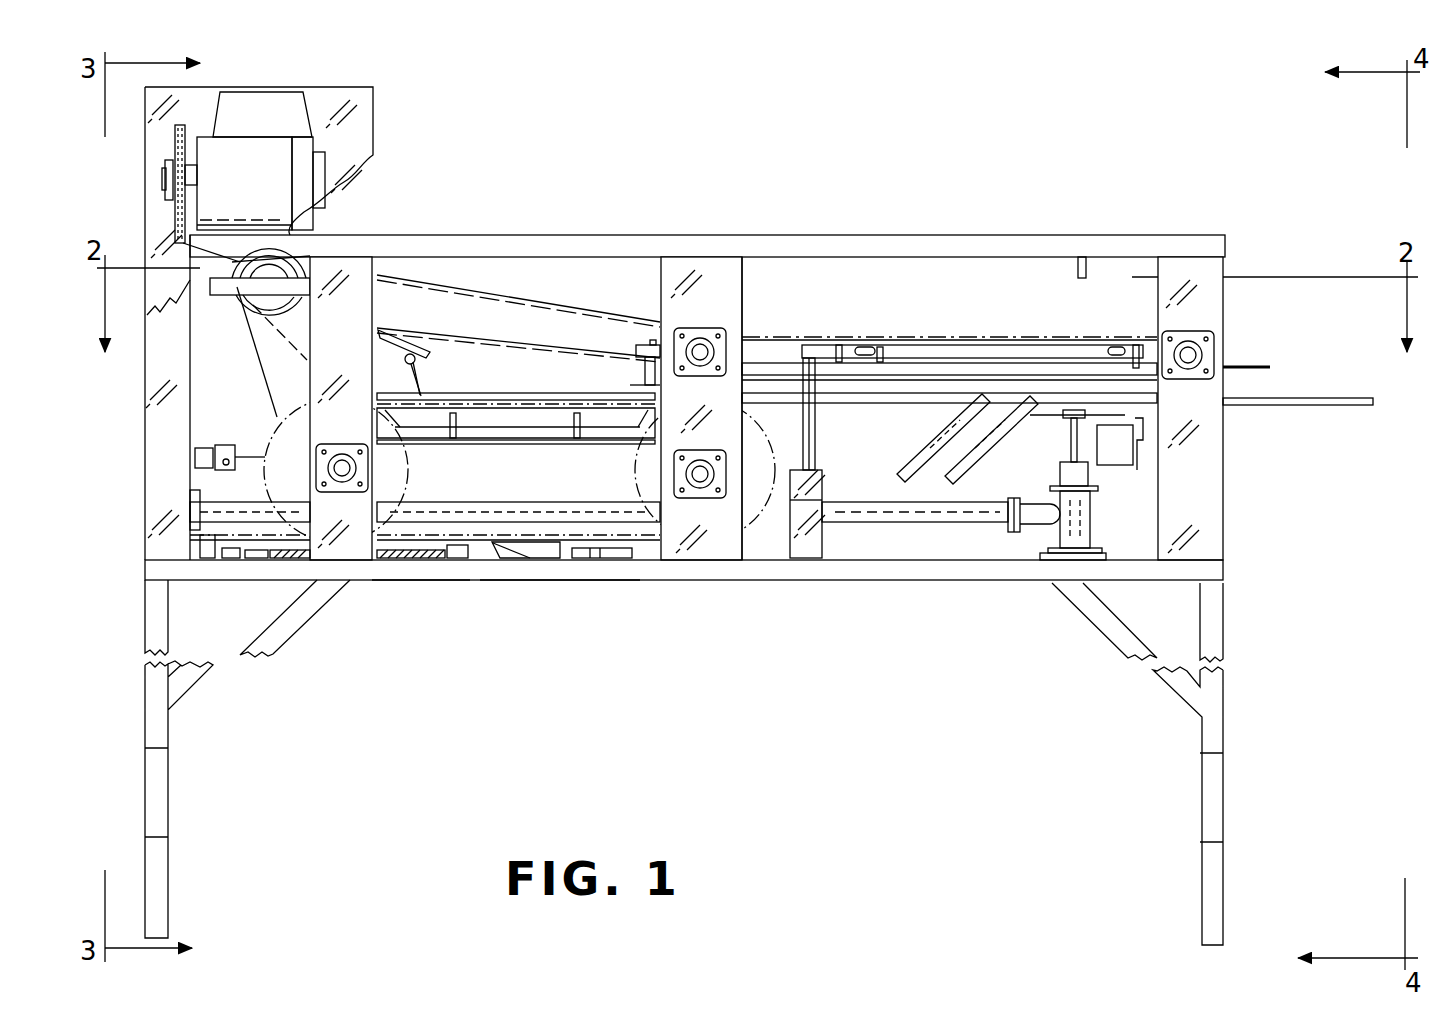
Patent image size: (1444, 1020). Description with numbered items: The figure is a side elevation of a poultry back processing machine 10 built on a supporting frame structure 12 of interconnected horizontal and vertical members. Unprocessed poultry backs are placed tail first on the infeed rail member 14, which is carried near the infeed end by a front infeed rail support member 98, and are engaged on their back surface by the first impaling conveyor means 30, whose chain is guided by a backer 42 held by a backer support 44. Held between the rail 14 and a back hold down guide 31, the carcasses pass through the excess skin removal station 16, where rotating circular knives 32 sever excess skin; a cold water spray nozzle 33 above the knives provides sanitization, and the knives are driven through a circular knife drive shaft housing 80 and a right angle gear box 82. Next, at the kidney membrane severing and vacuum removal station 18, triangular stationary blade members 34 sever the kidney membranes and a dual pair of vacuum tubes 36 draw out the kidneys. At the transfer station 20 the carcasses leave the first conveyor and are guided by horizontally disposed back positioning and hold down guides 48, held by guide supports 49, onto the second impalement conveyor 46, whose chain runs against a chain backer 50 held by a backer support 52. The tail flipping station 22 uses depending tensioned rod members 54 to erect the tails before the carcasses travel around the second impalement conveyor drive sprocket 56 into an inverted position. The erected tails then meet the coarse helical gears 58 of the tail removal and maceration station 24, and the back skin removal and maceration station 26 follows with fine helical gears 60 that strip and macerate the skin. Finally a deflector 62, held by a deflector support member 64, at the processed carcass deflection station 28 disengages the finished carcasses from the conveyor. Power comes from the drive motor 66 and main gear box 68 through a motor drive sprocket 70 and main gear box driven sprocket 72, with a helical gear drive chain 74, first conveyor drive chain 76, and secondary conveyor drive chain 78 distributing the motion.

The poultry back processing machine 10 is at (795, 158).
The supporting frame structure 12 is at (1100, 234).
The infeed rail member 14 is at (1370, 398).
The excess skin removal station 16 is at (1046, 435).
The kidney membrane severing and vacuum removal station 18 is at (995, 392).
The transfer station 20 is at (708, 405).
The tail flipping station 22 is at (435, 356).
The tail removal and maceration station 24 is at (277, 568).
The back skin removal and maceration station 26 is at (422, 568).
The processed carcass deflection station 28 is at (527, 568).
The first impaling conveyor means 30 is at (915, 337).
The back hold down guide 31 is at (880, 355).
The rotating circular knives 32 is at (1088, 412).
The cold water spray nozzle 33 is at (1086, 272).
The stationary blade members 34 is at (1044, 398).
The vacuum tubes 36 is at (905, 466).
The backer 42 is at (940, 370).
The backer support 44 is at (815, 347).
The second impalement conveyor 46 is at (470, 400).
The back positioning and hold down guides 48 is at (510, 404).
The guide supports 49 is at (226, 445).
The chain backer 50 is at (545, 412).
The backer support 52 is at (518, 447).
The depending tensioned rod members 54 is at (428, 370).
The second impalement conveyor drive sprocket 56 is at (410, 455).
The coarse helical gears 58 is at (290, 550).
The fine helical gears 60 is at (432, 568).
The deflector 62 is at (548, 560).
The deflector support member 64 is at (612, 560).
The drive motor 66 is at (355, 152).
The main gear box 68 is at (278, 97).
The motor drive sprocket 70 is at (165, 172).
The main gear box driven sprocket 72 is at (178, 125).
The helical gear drive chain 74 is at (164, 210).
The first conveyor drive chain 76 is at (450, 287).
The secondary conveyor drive chain 78 is at (248, 343).
The circular knife drive shaft housing 80 is at (518, 500).
The right angle gear box 82 is at (1090, 522).
The front infeed rail support member 98 is at (1138, 446).